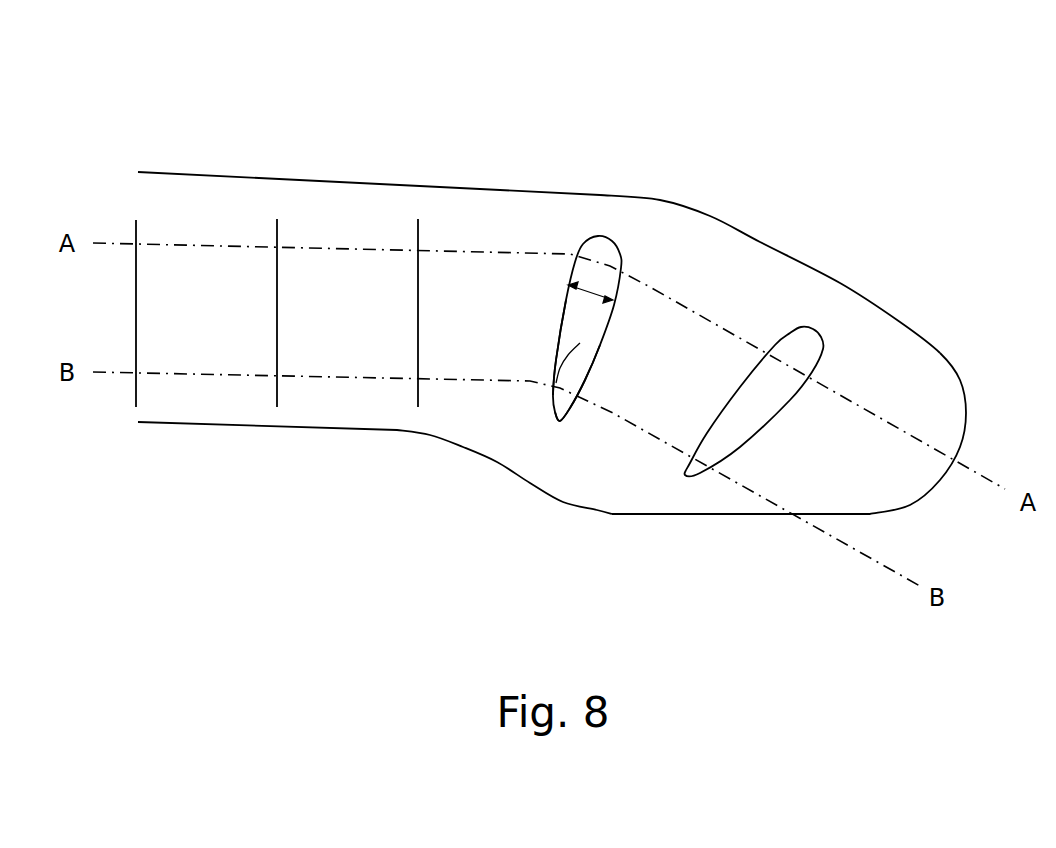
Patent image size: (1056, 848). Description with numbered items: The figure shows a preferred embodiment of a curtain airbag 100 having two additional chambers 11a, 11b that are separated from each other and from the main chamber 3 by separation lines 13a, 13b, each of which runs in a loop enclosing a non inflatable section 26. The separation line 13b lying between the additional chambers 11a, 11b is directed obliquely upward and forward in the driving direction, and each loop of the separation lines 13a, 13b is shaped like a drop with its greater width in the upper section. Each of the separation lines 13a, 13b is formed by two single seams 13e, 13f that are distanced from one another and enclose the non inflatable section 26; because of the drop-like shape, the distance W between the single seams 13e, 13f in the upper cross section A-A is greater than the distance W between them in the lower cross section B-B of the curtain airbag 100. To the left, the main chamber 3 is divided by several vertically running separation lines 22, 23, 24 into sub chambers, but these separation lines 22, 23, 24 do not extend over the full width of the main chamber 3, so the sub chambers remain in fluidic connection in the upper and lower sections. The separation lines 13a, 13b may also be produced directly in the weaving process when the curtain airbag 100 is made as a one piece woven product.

The curtain airbag 100 is at (392, 116).
The main chamber 3 is at (218, 197).
The additional chamber 11a is at (668, 330).
The additional chamber 11b is at (870, 467).
The separation line 13a is at (593, 233).
The separation line 13b is at (800, 328).
The single seam 13e is at (555, 352).
The single seam 13f is at (593, 378).
The non inflatable section 26 is at (557, 421).
The separation line 22 is at (418, 397).
The separation line 23 is at (277, 397).
The separation line 24 is at (136, 400).